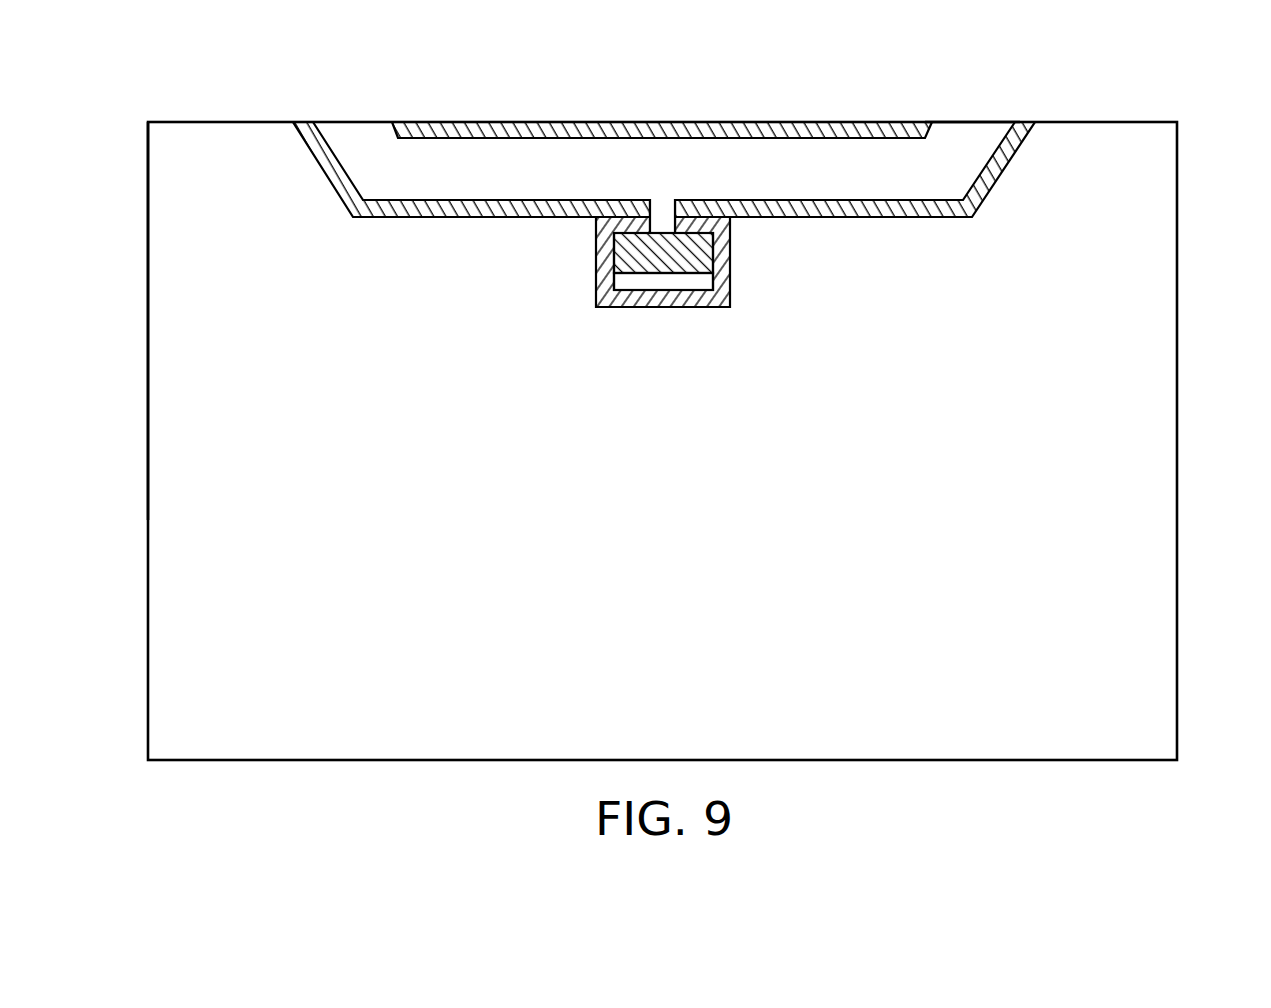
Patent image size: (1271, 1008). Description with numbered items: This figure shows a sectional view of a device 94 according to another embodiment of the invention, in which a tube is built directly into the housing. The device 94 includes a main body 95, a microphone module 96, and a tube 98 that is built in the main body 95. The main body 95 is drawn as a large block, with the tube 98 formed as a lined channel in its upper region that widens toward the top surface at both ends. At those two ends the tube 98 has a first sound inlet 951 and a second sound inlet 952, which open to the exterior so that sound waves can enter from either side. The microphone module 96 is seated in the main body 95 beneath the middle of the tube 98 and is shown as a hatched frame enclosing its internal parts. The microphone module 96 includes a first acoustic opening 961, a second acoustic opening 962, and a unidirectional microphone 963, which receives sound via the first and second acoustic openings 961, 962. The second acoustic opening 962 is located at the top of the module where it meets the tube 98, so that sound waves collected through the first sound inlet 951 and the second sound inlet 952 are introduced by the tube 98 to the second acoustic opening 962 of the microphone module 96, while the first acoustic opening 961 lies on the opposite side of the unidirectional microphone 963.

The device 94 is at (144, 319).
The main body 95 is at (1160, 465).
The first sound inlet 951 is at (971, 122).
The second sound inlet 952 is at (346, 122).
The microphone module 96 is at (736, 275).
The first acoustic opening 961 is at (686, 284).
The second acoustic opening 962 is at (660, 228).
The unidirectional microphone 963 is at (631, 262).
The tube 98 is at (449, 222).